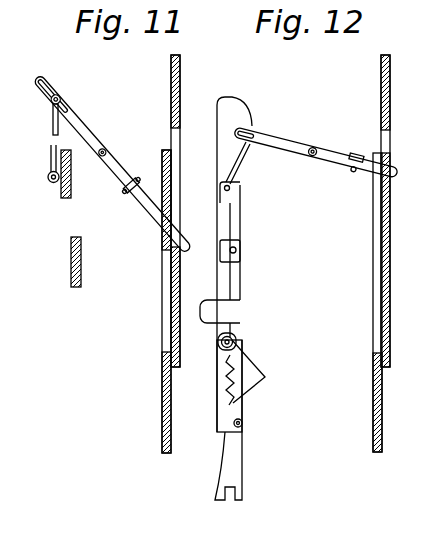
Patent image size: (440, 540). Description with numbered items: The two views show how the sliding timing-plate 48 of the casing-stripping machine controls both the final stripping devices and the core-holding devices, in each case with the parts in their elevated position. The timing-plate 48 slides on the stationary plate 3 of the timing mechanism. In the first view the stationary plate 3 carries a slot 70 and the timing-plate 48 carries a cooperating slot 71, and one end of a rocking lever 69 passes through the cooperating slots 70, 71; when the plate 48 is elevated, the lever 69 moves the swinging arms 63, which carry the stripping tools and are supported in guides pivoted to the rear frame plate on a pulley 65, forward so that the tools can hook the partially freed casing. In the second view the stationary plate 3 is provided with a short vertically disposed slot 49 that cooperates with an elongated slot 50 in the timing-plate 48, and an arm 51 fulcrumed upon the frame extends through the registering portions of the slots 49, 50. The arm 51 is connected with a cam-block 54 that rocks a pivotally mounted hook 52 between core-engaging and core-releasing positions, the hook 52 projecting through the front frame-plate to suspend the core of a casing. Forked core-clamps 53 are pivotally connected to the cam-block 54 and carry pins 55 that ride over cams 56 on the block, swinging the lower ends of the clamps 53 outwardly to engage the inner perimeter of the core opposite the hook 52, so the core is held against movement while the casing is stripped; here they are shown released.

In FIG. 11, the stationary plate of the timing-mechanism 3 is at (180, 275).
In FIG. 12, the stationary plate of the timing-mechanism 3 is at (383, 221).
In FIG. 11, the timing-plate 48 is at (162, 392).
In FIG. 12, the timing-plate 48 is at (372, 387).
In FIG. 12, the short vertically disposed slot 49 is at (383, 138).
In FIG. 12, the elongated slot 50 is at (378, 252).
In FIG. 12, the arm 51 is at (277, 141).
In FIG. 12, the hook 52 is at (233, 322).
In FIG. 12, the core-clamps 53 is at (236, 458).
In FIG. 12, the cam-block 54 is at (236, 112).
In FIG. 12, the pins 55 is at (234, 340).
In FIG. 12, the cams 56 is at (264, 380).
In FIG. 11, the swinging arms 63 is at (81, 280).
In FIG. 11, the pulley 65 is at (72, 180).
In FIG. 11, the rocking lever 69 is at (119, 170).
In FIG. 11, the slot 70 is at (180, 198).
In FIG. 11, the slot 71 is at (165, 315).